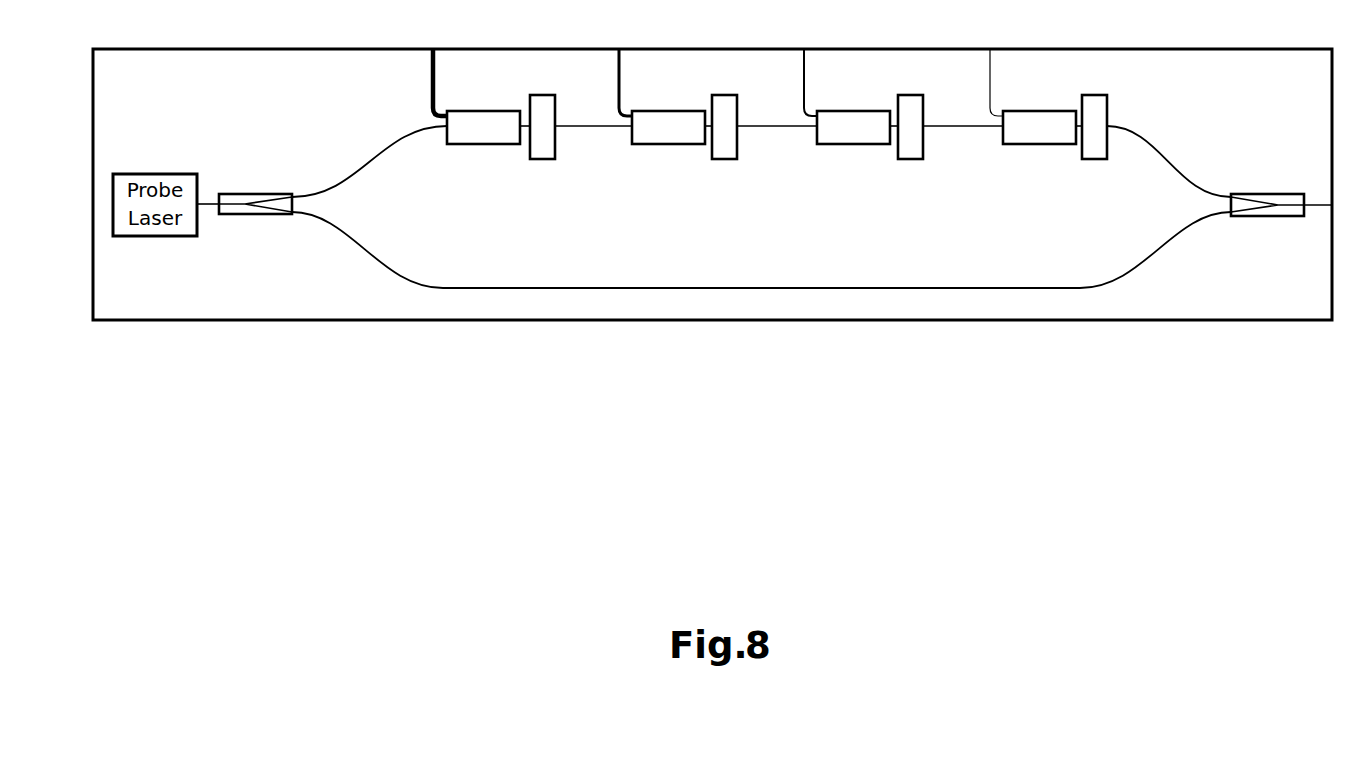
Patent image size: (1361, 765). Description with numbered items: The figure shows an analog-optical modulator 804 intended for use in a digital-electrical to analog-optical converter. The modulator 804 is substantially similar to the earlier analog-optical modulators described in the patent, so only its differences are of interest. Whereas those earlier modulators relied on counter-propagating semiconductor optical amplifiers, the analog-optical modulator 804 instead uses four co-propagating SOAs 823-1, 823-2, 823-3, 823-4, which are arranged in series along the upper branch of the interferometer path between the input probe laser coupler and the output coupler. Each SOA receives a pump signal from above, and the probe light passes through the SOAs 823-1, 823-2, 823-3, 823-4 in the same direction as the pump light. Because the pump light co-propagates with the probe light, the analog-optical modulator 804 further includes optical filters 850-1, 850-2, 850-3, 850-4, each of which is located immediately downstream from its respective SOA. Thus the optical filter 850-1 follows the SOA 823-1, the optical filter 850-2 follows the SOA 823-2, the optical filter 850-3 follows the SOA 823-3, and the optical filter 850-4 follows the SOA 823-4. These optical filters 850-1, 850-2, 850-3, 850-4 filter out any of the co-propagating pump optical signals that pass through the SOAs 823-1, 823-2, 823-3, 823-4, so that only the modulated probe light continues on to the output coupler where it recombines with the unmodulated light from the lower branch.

The analog-optical modulator 804 is at (1308, 79).
The co-propagating SOA 823-1 is at (455, 144).
The co-propagating SOA 823-2 is at (640, 144).
The co-propagating SOA 823-3 is at (825, 144).
The co-propagating SOA 823-4 is at (1011, 144).
The optical filter 850-1 is at (537, 159).
The optical filter 850-2 is at (719, 159).
The optical filter 850-3 is at (905, 159).
The optical filter 850-4 is at (1089, 159).